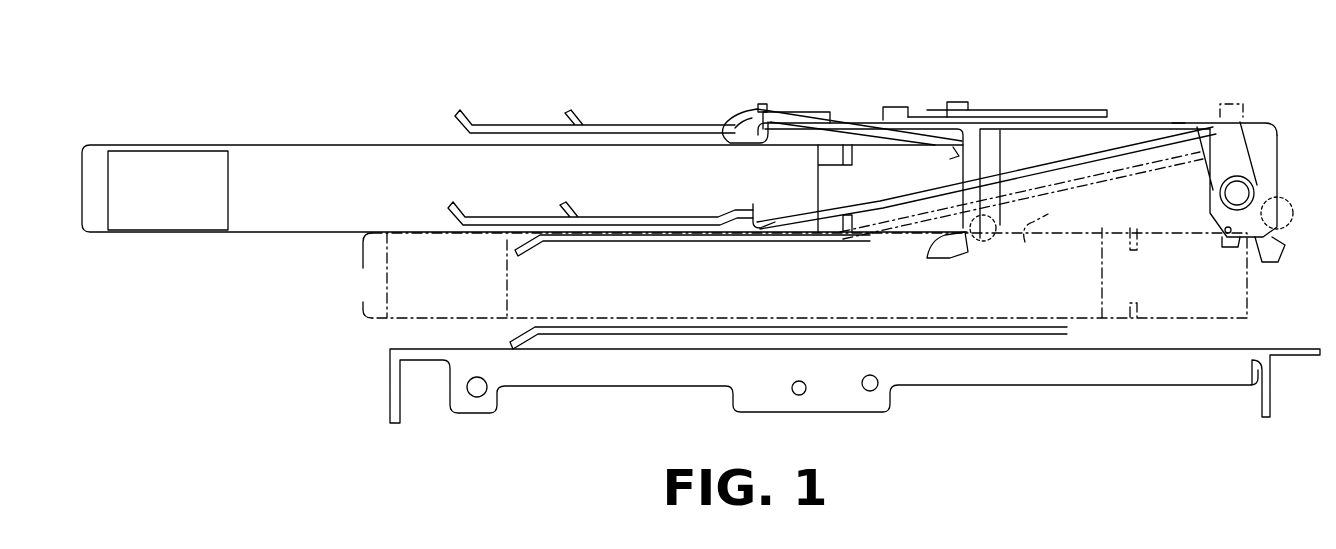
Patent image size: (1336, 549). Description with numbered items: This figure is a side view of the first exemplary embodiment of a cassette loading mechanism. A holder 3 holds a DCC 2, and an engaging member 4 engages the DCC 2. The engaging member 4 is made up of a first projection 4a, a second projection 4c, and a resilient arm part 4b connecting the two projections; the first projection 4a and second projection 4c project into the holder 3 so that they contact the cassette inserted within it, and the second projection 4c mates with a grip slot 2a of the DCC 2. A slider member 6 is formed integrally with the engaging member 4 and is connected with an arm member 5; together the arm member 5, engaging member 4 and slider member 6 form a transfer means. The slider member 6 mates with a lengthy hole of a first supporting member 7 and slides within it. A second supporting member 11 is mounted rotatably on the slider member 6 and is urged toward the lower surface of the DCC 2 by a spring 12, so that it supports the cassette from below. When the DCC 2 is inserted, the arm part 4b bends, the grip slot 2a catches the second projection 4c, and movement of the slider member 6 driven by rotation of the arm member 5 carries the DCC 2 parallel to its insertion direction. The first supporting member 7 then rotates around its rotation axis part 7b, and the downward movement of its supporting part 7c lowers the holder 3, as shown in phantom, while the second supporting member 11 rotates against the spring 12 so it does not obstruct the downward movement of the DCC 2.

The DCC 2 is at (263, 145).
The grip slot 2a is at (958, 150).
The holder 3 is at (480, 215).
The engaging member 4 is at (753, 108).
The first projection 4a is at (740, 128).
The arm part 4b is at (848, 123).
The second projection 4c is at (953, 150).
The arm member 5 is at (1030, 110).
The slider member 6 is at (897, 107).
The first supporting member 7 is at (1000, 160).
The rotation axis part 7b is at (1228, 247).
The supporting part 7c is at (762, 104).
The second supporting member 11 is at (937, 257).
The spring 12 is at (960, 252).